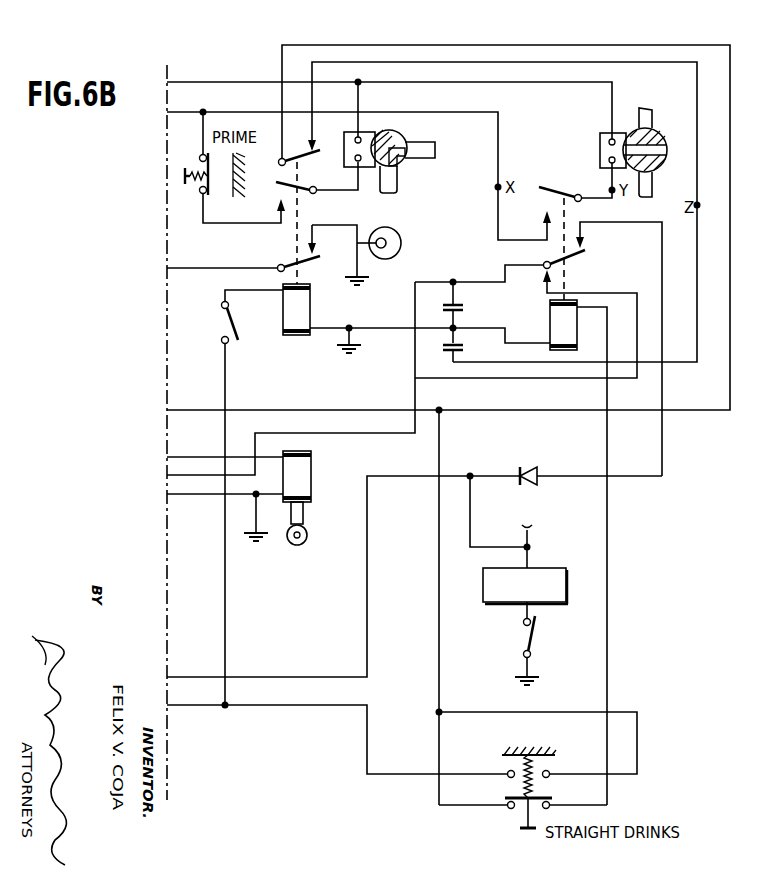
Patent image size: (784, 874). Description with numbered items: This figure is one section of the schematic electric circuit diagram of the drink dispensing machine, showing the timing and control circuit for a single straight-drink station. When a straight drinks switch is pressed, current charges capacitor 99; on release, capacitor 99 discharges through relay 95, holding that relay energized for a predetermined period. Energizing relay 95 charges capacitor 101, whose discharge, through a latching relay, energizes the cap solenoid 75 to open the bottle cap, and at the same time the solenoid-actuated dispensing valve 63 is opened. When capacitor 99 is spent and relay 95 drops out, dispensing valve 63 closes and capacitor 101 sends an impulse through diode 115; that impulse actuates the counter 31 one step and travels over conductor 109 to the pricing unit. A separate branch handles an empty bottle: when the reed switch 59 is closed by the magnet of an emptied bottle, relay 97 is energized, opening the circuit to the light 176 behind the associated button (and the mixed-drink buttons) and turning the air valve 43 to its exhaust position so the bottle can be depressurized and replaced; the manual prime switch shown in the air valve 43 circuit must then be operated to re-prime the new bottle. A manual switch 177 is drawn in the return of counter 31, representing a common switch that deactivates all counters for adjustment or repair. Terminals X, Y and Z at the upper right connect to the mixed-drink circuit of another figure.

The air valve 43 is at (408, 137).
The dispensing valve 63 is at (656, 148).
The light 176 is at (400, 230).
The reed switch 59 is at (232, 318).
The relay 97 is at (310, 314).
The capacitor 101 is at (458, 314).
The capacitor 99 is at (459, 352).
The relay 95 is at (555, 322).
The cap solenoid 75 is at (306, 489).
The diode 115 is at (530, 466).
The conductor 109 is at (532, 537).
The counter 31 is at (505, 605).
The manual switch 177 is at (535, 641).